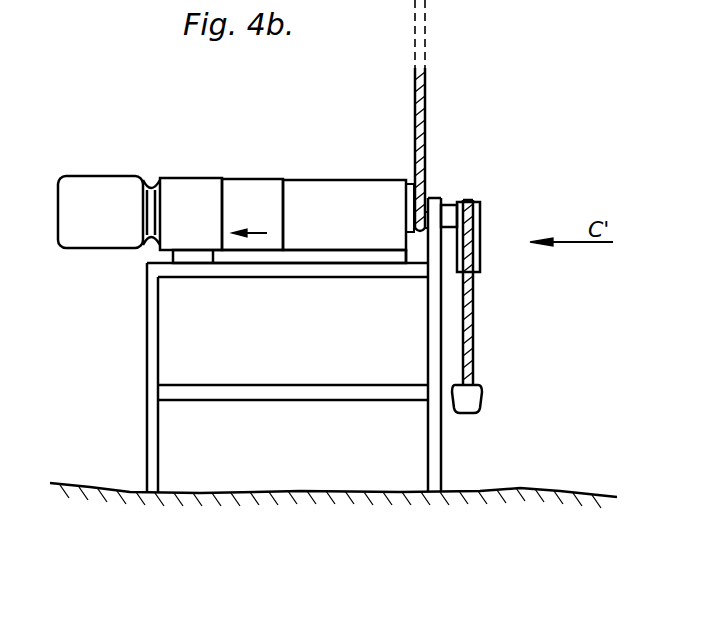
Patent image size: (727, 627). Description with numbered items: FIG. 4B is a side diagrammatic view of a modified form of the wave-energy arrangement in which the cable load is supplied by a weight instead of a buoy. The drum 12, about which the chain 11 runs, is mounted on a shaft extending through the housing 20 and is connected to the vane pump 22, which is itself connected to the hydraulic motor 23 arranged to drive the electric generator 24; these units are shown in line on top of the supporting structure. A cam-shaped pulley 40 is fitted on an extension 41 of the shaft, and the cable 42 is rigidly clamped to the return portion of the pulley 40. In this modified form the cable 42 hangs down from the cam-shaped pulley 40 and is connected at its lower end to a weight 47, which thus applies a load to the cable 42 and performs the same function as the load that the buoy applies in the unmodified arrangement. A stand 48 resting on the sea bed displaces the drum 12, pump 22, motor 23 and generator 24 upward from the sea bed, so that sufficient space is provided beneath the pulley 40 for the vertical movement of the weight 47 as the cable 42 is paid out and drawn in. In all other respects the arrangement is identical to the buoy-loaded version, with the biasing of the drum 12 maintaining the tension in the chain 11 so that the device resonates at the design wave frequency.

The chain 11 is at (415, 72).
The drum 12 is at (410, 192).
The housing 20 is at (385, 233).
The vane pump 22 is at (263, 192).
The hydraulic motor 23 is at (200, 193).
The electric generator 24 is at (112, 193).
The cam-shaped pulley 40 is at (480, 215).
The extension 41 is at (452, 205).
The cable 42 is at (470, 320).
The weight 47 is at (468, 395).
The stand 48 is at (147, 343).